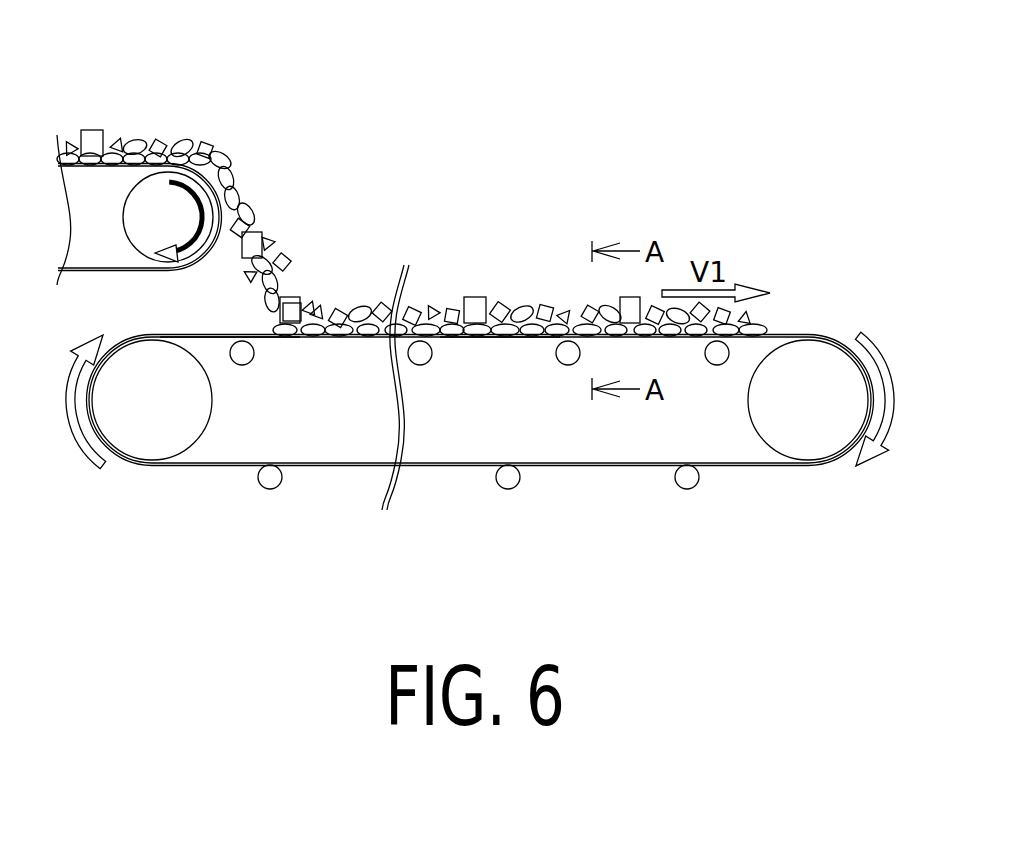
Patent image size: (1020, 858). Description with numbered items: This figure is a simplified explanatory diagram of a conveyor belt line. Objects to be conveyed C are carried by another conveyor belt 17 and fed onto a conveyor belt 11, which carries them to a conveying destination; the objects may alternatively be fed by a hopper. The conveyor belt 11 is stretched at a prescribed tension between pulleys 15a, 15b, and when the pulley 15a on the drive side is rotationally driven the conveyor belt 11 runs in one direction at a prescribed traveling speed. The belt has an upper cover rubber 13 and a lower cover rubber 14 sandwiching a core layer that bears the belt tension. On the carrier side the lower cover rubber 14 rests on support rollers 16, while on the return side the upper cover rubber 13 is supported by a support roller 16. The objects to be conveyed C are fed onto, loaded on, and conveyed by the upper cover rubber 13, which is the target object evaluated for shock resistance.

The conveyor belt 11 is at (787, 337).
The upper cover rubber 13 is at (212, 337).
The lower cover rubber 14 is at (505, 340).
The pulley 15a is at (814, 446).
The pulley 15b is at (150, 443).
The support roller 16 is at (243, 365).
The conveyor belt 17 is at (188, 138).
The objects to be conveyed C is at (258, 222).